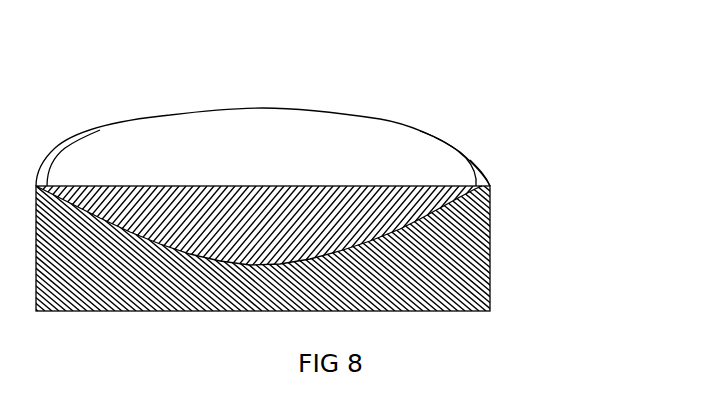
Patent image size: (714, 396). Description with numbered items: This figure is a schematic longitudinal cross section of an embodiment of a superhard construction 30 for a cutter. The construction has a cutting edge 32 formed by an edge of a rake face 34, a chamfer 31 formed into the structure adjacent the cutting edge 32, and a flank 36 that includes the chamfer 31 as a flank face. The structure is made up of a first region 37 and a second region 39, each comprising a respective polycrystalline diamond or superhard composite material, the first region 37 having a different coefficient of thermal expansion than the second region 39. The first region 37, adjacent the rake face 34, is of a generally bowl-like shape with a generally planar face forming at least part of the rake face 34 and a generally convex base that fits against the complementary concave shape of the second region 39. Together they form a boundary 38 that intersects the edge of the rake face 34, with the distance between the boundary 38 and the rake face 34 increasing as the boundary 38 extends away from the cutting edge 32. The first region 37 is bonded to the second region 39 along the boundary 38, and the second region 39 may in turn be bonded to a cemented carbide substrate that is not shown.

The superhard construction 30 is at (140, 105).
The chamfer 31 is at (490, 186).
The cutting edge 32 is at (477, 184).
The rake face 34 is at (356, 148).
The flank 36 is at (525, 195).
The first region 37 is at (398, 186).
The boundary 38 is at (439, 205).
The second region 39 is at (455, 247).